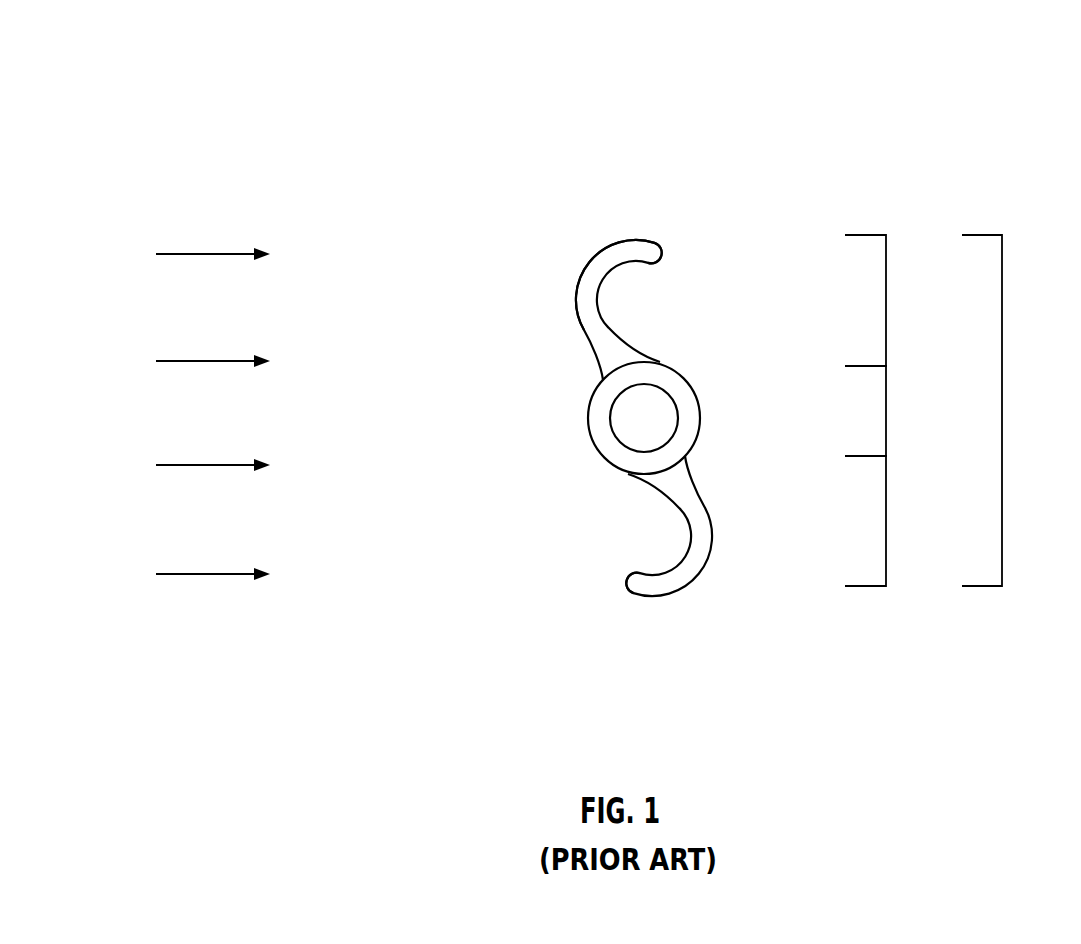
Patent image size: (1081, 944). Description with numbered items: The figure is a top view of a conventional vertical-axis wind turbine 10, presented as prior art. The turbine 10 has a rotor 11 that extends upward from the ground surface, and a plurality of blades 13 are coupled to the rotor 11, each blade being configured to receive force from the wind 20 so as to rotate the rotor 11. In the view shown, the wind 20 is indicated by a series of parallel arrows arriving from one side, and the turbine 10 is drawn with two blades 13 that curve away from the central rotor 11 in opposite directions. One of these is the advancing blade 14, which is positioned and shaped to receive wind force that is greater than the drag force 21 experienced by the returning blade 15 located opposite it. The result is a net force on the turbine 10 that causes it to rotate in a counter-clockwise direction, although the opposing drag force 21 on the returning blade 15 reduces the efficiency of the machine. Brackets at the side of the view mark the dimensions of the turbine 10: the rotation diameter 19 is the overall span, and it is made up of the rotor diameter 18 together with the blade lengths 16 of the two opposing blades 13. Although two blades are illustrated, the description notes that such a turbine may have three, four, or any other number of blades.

The wind turbine 10 is at (768, 58).
The rotor 11 is at (600, 378).
The blades 13 is at (642, 240).
The advancing blade 14 is at (692, 577).
The returning blade 15 is at (606, 247).
The blade lengths 16 is at (892, 410).
The rotor diameter 18 is at (892, 411).
The rotation diameter 19 is at (1013, 410).
The wind 20 is at (140, 208).
The drag force 21 is at (580, 283).